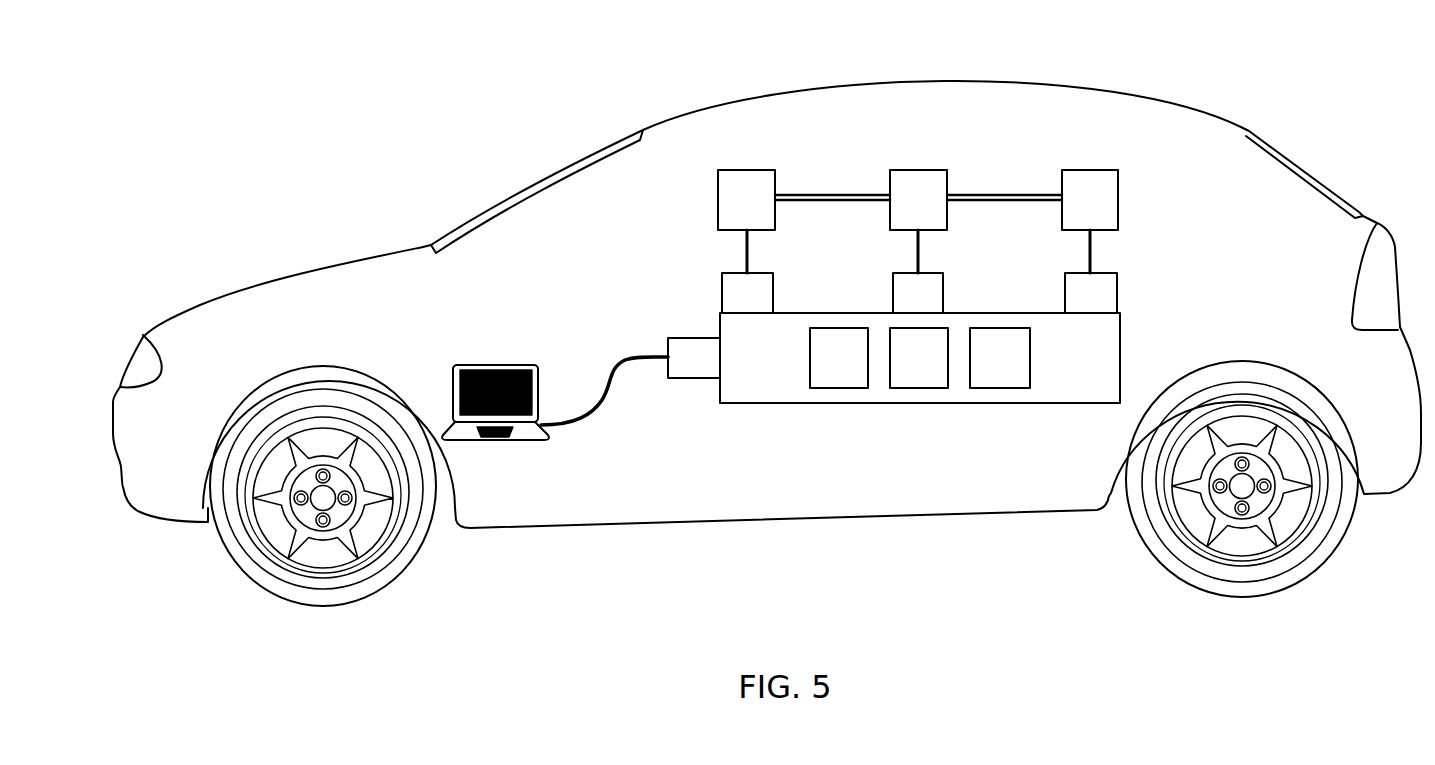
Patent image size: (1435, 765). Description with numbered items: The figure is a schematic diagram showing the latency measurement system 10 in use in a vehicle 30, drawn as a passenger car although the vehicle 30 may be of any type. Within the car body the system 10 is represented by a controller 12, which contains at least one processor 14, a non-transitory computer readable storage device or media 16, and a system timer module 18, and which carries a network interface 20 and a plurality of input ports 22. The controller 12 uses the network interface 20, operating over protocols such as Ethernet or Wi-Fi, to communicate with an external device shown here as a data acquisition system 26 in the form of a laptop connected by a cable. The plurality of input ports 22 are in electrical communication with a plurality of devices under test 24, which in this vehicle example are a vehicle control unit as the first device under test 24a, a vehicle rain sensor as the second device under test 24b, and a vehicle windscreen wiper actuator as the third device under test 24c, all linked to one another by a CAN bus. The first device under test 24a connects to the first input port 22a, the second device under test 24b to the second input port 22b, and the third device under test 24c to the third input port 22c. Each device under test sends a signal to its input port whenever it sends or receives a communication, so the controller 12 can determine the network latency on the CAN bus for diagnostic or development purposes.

The latency measurement system 10 is at (688, 448).
The controller 12 is at (1020, 403).
The processor 14 is at (839, 358).
The non-transitory computer readable storage device or media 16 is at (919, 358).
The system timer module 18 is at (1000, 358).
The network interface 20 is at (694, 358).
The plurality of input ports 22 is at (722, 292).
The first input port 22a is at (747, 293).
The second input port 22b is at (918, 293).
The third input port 22c is at (1091, 293).
The plurality of devices under test 24 is at (1085, 170).
The first device under test 24a is at (746, 200).
The second device under test 24b is at (918, 200).
The third device under test 24c is at (1090, 200).
The data acquisition system 26 is at (475, 440).
The vehicle 30 is at (1151, 95).